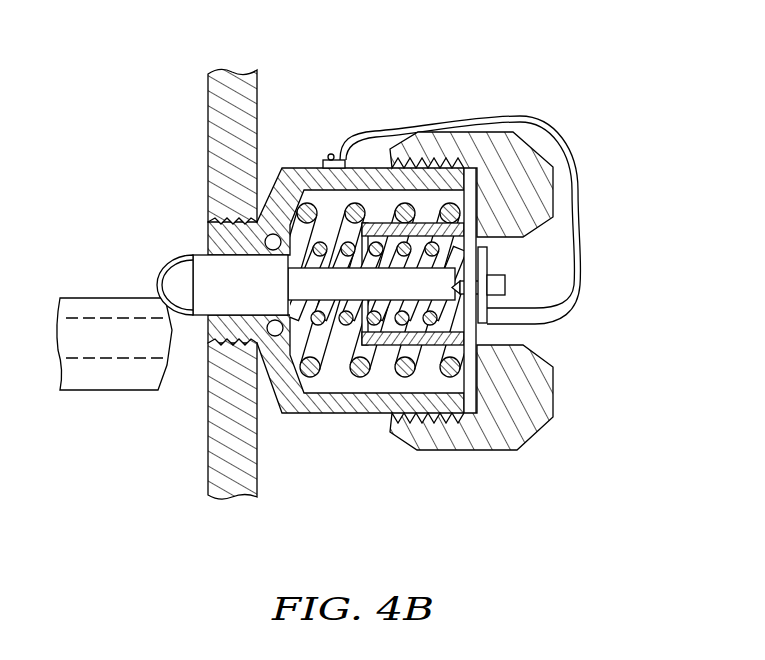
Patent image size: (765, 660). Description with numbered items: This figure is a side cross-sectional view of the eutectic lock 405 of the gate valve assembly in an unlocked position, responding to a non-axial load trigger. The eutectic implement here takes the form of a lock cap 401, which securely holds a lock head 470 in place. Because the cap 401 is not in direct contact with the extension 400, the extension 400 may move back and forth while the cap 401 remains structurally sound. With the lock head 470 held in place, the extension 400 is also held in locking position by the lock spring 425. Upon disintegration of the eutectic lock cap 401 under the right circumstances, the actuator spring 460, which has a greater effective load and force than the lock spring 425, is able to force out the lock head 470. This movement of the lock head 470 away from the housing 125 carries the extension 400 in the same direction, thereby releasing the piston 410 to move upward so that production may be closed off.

The housing 125 is at (247, 470).
The extension 400 is at (247, 297).
The lock cap 401 is at (502, 143).
The eutectic lock 405 is at (508, 44).
The piston 410 is at (133, 350).
The lock spring 425 is at (374, 355).
The actuator spring 460 is at (370, 218).
The lock head 470 is at (476, 338).